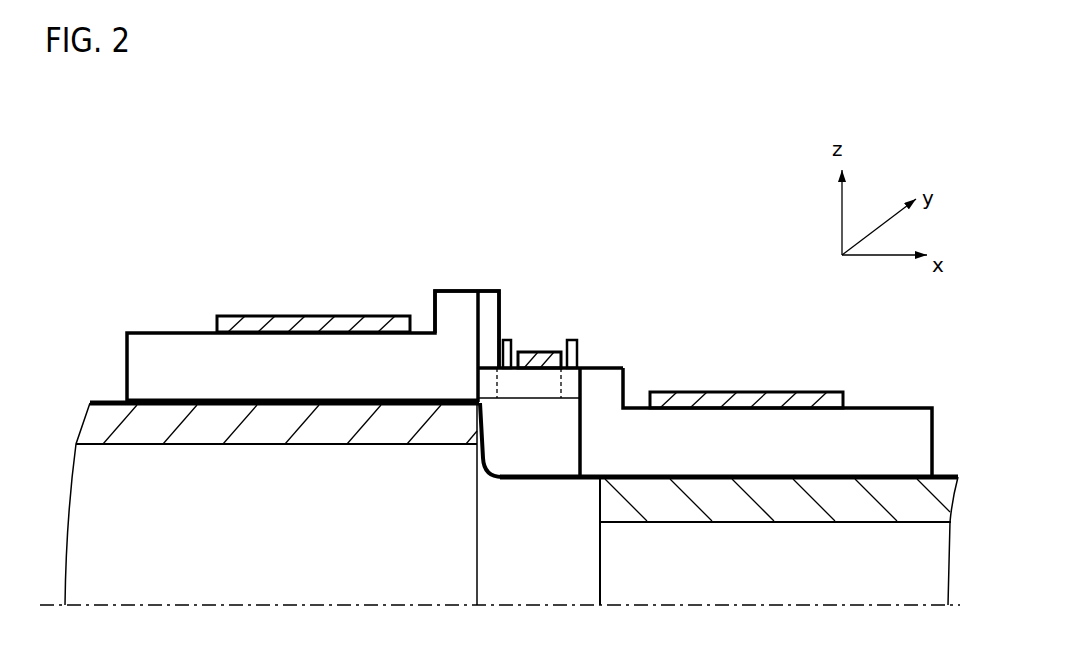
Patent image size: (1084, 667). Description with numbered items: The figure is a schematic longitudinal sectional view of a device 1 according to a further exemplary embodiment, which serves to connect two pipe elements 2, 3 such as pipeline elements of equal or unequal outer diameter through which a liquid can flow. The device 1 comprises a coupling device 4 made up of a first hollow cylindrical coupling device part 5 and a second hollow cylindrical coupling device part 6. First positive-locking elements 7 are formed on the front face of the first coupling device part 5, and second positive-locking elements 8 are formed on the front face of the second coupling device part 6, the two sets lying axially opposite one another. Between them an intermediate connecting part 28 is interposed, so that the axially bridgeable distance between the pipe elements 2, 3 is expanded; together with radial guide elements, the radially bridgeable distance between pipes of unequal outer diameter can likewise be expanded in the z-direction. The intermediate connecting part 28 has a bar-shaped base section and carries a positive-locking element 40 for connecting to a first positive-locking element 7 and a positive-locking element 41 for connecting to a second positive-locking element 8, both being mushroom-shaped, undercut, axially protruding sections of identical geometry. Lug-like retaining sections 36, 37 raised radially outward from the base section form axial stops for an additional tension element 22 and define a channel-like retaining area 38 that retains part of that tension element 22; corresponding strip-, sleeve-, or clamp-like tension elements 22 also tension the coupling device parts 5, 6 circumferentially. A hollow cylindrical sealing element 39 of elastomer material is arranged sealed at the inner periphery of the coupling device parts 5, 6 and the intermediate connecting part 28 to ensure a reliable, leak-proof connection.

The device 1 is at (316, 212).
The pipe element 2 is at (103, 420).
The pipe element 3 is at (945, 488).
The coupling device 4 is at (676, 177).
The first coupling device part 5 is at (142, 295).
The second coupling device part 6 is at (914, 389).
The first positive-locking elements 7 is at (472, 276).
The second positive-locking elements 8 is at (597, 346).
The tension element 22 is at (283, 316).
The intermediate connecting part 28 is at (526, 404).
The lug-like retaining section 36 is at (502, 350).
The lug-like retaining section 37 is at (573, 340).
The channel-like retaining area 38 is at (561, 342).
The sealing element 39 is at (236, 406).
The positive-locking element 40 is at (486, 392).
The positive-locking element 41 is at (567, 389).